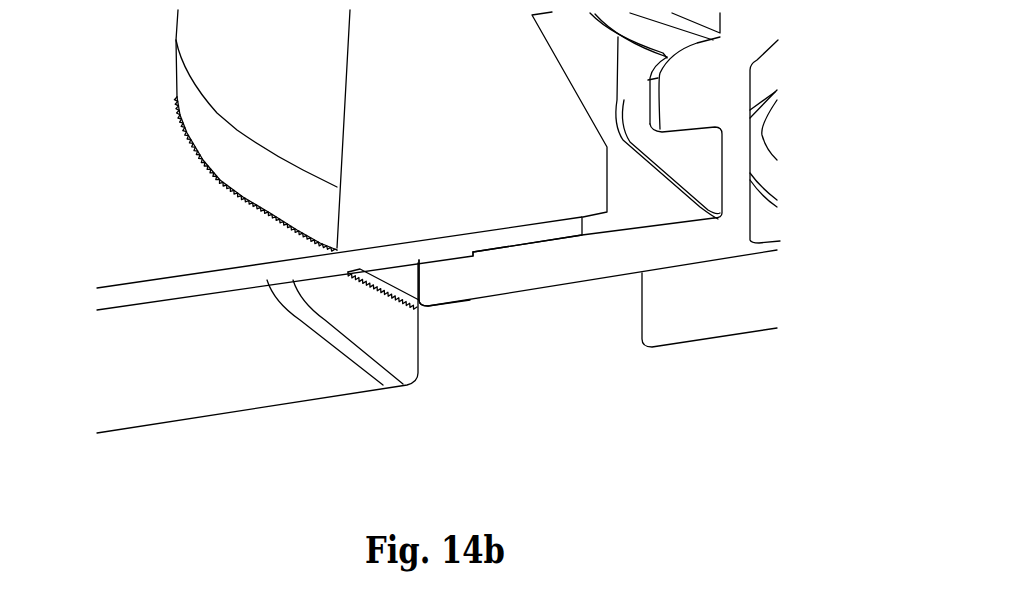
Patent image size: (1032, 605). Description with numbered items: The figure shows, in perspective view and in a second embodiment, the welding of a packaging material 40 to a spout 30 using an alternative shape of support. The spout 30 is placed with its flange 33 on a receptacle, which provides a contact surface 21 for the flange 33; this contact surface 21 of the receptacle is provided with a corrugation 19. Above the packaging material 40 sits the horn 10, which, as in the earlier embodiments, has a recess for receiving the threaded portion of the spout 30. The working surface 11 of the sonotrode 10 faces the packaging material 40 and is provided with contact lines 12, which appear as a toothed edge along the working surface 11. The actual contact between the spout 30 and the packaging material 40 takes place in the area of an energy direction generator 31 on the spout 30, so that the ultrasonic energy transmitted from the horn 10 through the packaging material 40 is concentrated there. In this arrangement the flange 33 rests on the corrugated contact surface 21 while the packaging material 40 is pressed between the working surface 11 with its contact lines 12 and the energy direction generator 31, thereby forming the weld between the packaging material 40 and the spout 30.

The horn 10 is at (257, 68).
The working surface 11 is at (217, 180).
The contact lines 12 is at (253, 212).
The corrugation 19 is at (382, 288).
The contact surface 21 is at (610, 278).
The spout 30 is at (577, 260).
The energy direction generator 31 is at (452, 260).
The flange 33 is at (507, 270).
The packaging material 40 is at (153, 292).